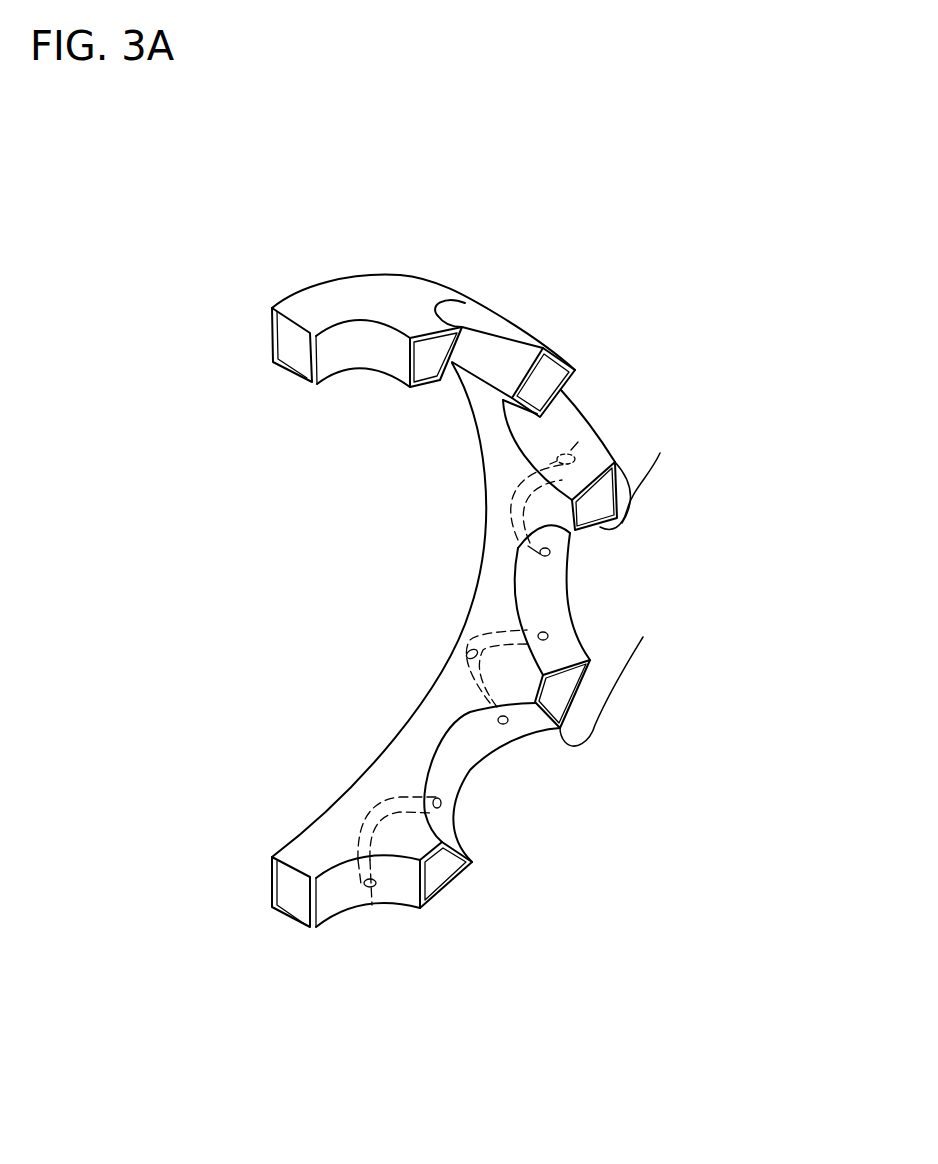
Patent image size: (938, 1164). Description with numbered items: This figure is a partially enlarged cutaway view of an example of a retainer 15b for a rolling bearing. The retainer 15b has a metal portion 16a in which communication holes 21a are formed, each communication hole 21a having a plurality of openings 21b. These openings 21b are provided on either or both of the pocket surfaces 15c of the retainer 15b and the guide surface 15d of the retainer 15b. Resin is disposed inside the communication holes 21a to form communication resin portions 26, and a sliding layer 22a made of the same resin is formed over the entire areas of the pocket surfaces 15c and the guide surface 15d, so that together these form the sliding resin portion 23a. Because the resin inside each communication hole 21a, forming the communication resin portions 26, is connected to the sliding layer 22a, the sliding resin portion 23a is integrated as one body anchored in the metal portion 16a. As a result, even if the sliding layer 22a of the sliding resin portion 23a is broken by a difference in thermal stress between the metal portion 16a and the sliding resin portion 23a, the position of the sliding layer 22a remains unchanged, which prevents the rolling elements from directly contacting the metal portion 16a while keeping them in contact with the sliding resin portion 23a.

The retainer 15b is at (498, 314).
The pocket surfaces 15c is at (560, 645).
The guide surface 15d is at (360, 298).
The metal portion 16a is at (403, 743).
The communication holes 21a is at (466, 636).
The openings 21b is at (450, 800).
The sliding layer 22a is at (598, 457).
The sliding resin portion 23a is at (663, 357).
The communication resin portions 26 is at (590, 430).